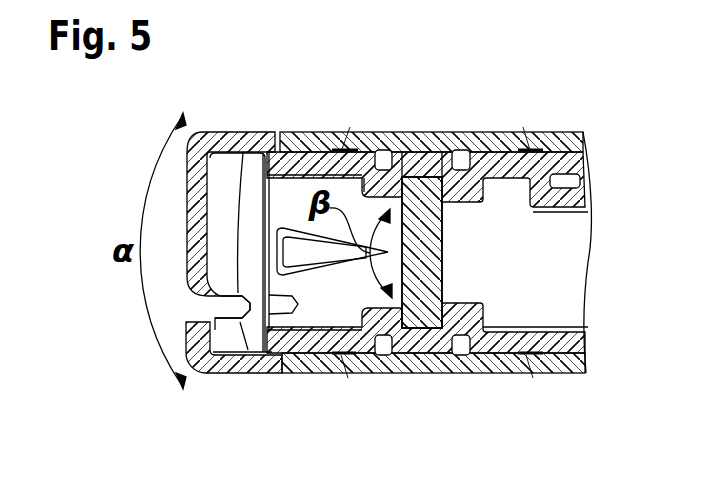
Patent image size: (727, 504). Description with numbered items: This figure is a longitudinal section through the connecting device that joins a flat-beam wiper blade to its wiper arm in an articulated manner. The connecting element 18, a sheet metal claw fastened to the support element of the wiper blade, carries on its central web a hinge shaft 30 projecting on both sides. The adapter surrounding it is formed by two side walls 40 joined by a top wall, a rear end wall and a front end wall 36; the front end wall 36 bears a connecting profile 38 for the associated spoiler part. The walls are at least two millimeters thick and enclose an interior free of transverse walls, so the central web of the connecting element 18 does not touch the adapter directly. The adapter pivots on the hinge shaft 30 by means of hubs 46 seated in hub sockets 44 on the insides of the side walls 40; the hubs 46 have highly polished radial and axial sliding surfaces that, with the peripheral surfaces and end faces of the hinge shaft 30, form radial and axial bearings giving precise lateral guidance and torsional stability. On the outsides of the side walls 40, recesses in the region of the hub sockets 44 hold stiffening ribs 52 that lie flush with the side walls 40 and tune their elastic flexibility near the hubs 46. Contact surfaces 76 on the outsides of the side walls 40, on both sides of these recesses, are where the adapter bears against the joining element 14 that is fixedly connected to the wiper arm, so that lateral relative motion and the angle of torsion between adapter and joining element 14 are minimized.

The joining element 14 is at (580, 138).
The connecting element 18 is at (568, 257).
The hinge shaft 30 is at (427, 306).
The front end wall 36 is at (193, 193).
The connecting profile 38 is at (224, 304).
The side walls 40 is at (562, 340).
The hub sockets 44 is at (387, 192).
The hubs 46 is at (425, 173).
The stiffening ribs 52 is at (452, 154).
The contact surfaces 76 is at (342, 149).